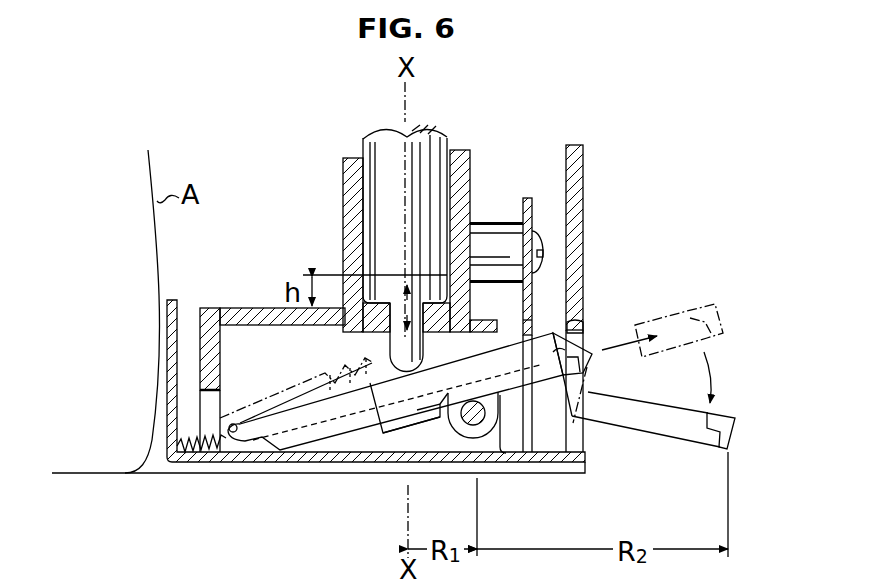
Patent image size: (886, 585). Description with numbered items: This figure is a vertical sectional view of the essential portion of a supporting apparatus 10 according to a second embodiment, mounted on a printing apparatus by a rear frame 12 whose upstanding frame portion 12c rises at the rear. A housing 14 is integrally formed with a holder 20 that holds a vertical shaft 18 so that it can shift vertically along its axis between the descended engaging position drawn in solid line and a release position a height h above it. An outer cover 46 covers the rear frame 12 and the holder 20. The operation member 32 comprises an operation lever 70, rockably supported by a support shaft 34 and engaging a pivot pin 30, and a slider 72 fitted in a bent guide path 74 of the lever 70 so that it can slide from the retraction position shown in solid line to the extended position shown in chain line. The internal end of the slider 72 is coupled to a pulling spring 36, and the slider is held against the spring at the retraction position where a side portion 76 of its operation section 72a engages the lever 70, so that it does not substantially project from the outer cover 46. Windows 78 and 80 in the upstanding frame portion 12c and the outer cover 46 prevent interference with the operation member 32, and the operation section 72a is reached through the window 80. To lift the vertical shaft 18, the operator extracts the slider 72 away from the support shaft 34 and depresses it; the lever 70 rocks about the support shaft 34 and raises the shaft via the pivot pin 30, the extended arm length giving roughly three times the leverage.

The supporting apparatus 10 is at (553, 123).
The rear frame 12 is at (170, 350).
The upstanding frame portion 12c is at (532, 222).
The housing 14 is at (245, 306).
The vertical shaft 18 is at (377, 181).
The holder 20 is at (465, 188).
The pivot pin 30 is at (378, 352).
The operation member 32 is at (433, 440).
The support shaft 34 is at (495, 453).
The pulling spring 36 is at (190, 455).
The outer cover 46 is at (578, 188).
The operation lever 70 is at (485, 448).
The slider 72 is at (323, 430).
The operation section 72a is at (585, 360).
The bent guide path 74 is at (390, 440).
The side portion 76 is at (555, 352).
The window 78 is at (532, 327).
The window 80 is at (583, 323).